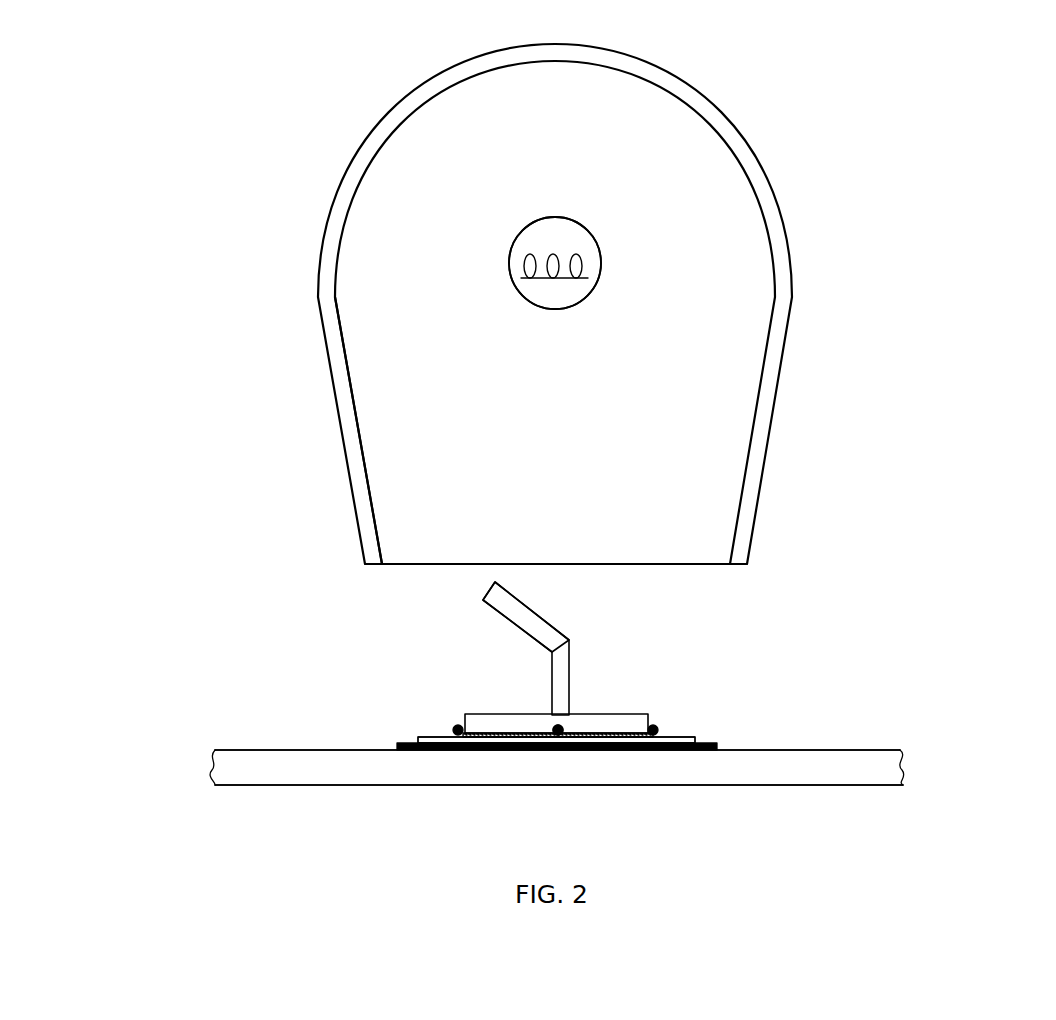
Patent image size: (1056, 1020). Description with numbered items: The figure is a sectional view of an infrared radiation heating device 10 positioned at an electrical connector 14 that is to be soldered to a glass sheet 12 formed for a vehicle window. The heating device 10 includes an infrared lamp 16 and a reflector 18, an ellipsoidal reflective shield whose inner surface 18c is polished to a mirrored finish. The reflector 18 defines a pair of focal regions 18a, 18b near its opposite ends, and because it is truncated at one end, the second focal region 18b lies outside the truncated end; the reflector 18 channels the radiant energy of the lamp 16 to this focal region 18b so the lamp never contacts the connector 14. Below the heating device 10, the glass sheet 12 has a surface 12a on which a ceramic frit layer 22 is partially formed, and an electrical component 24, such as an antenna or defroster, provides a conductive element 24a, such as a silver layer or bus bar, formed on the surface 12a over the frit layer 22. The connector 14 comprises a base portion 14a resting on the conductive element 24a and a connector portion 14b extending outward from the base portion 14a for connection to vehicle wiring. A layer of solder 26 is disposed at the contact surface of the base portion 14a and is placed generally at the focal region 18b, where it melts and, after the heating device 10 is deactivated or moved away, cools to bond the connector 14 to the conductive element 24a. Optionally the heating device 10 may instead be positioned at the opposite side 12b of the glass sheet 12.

The infrared radiation heating device 10 is at (230, 181).
The glass sheet 12 is at (877, 762).
The surface of the glass sheet 12a is at (852, 747).
The opposite side of the glass sheet 12b is at (322, 787).
The electrical connector 14 is at (589, 637).
The base portion 14a is at (503, 722).
The connector portion 14b is at (494, 606).
The infrared lamp 16 is at (598, 245).
The reflector 18 is at (771, 183).
The first focal region 18a is at (577, 317).
The second focal region 18b is at (562, 735).
The inner surface 18c is at (345, 338).
The ceramic frit layer 22 is at (717, 743).
The electrical component 24 is at (406, 719).
The conductive element 24a is at (668, 737).
The solder layer 26 is at (655, 727).